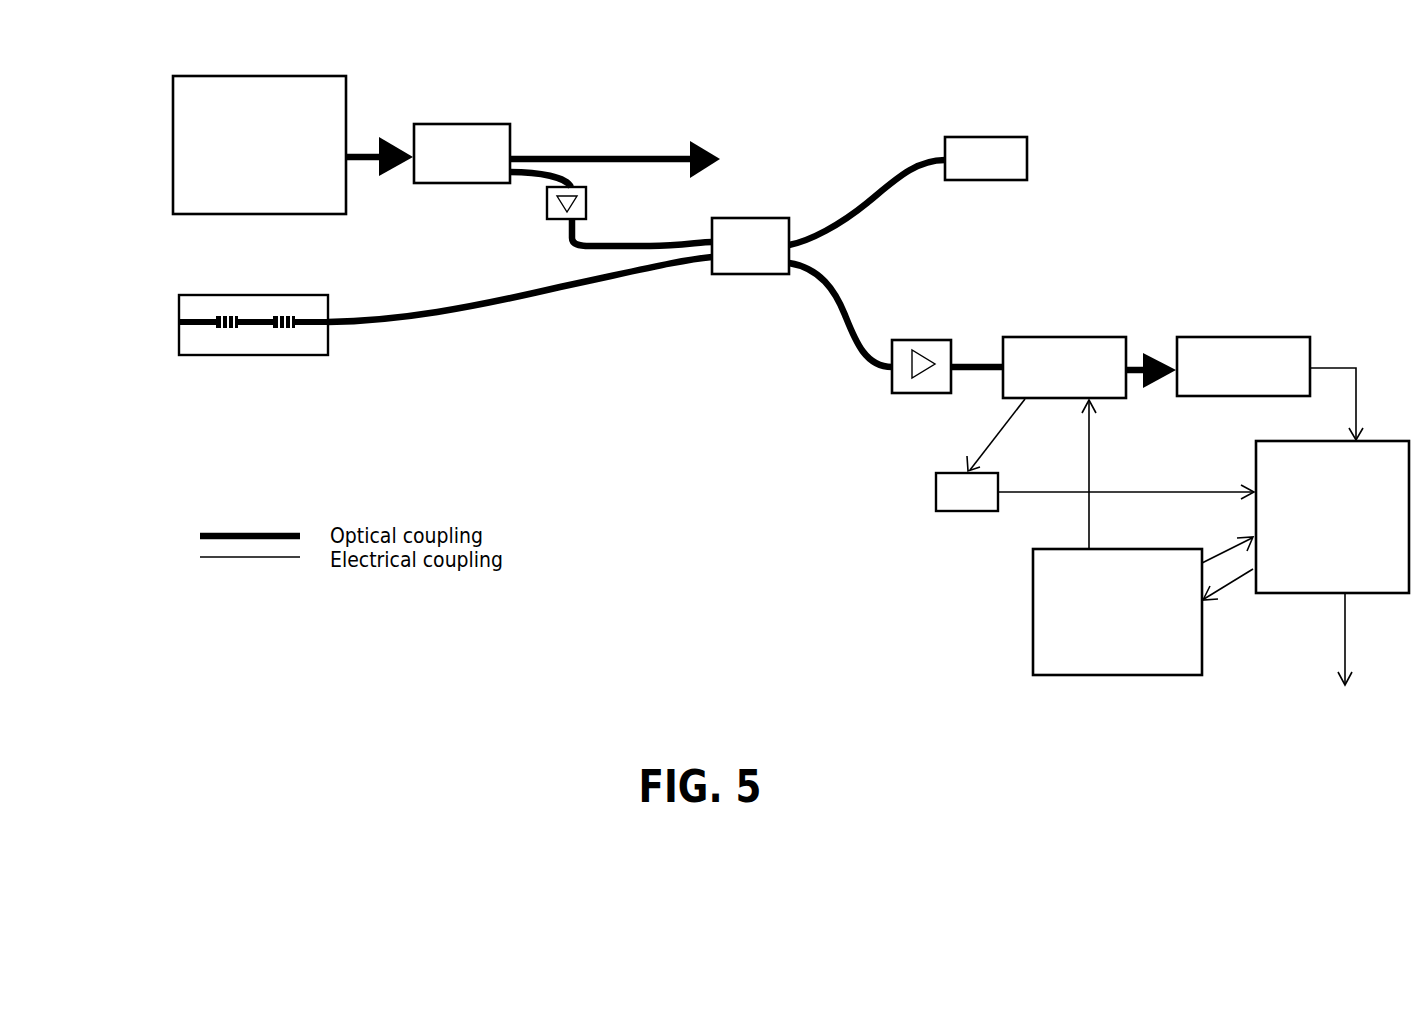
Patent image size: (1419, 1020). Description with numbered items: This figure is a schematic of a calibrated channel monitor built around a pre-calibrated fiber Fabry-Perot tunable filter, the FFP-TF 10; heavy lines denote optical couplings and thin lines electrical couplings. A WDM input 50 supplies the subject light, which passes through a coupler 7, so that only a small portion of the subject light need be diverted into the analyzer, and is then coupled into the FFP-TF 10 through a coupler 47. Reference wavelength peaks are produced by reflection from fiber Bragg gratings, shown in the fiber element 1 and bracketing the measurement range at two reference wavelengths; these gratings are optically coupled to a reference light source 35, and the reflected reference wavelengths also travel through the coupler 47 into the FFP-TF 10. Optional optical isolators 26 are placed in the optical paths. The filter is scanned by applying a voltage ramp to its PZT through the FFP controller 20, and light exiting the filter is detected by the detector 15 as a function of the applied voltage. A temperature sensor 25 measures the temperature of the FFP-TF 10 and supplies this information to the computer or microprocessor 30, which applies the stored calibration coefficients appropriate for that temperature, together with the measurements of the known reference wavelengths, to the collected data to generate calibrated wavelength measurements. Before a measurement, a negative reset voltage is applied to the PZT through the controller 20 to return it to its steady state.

The optical fiber sensor with gratings 1 is at (198, 342).
The coupler 7 is at (449, 143).
The FFP-TF 10 is at (1077, 352).
The detector 15 is at (1202, 393).
The FFP controller 20 is at (1082, 662).
The temperature sensor 25 is at (951, 500).
The optical isolator 26 is at (550, 222).
The computer or microprocessor 30 is at (1323, 585).
The reference light source 35 is at (979, 153).
The coupler 47 is at (742, 257).
The WDM input 50 is at (217, 108).